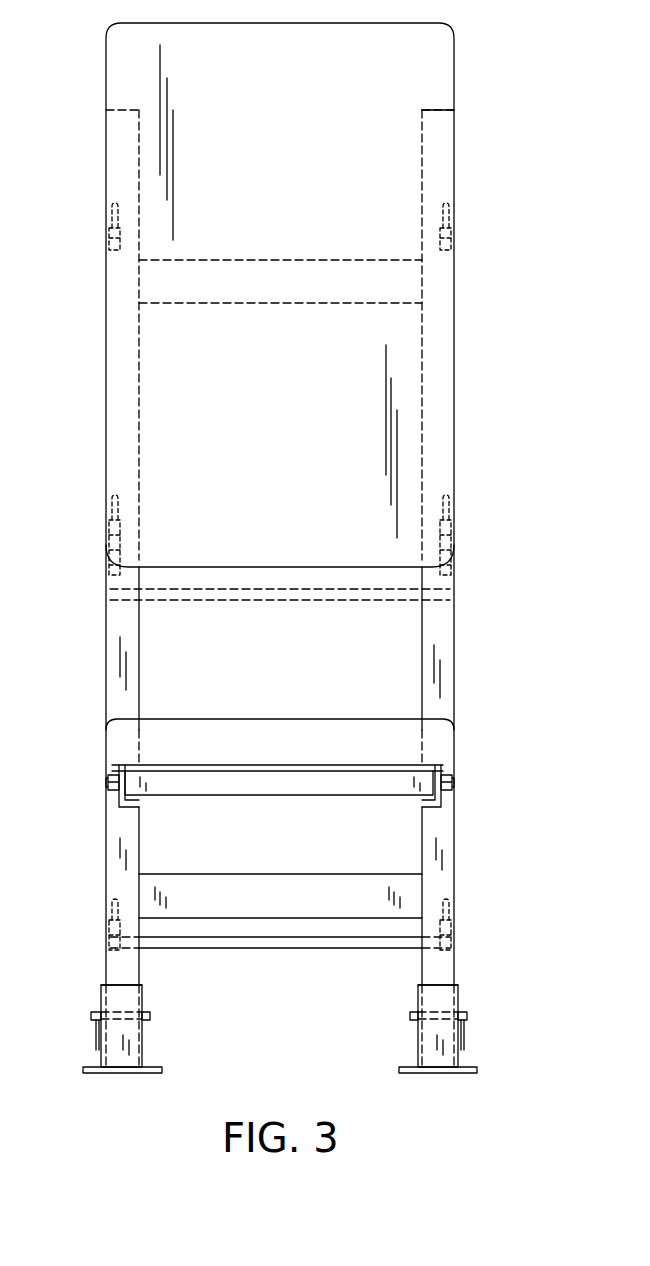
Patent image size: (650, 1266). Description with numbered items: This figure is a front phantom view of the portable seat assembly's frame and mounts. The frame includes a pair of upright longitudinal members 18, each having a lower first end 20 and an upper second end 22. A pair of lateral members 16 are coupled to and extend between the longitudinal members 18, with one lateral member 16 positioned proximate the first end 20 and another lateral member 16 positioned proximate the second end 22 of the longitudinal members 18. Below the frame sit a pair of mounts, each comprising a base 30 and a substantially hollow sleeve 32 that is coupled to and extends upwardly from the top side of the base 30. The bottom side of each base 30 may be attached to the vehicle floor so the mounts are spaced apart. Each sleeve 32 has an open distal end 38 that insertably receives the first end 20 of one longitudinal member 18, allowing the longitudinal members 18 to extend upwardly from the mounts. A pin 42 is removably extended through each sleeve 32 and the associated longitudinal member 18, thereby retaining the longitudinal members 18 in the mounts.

The lateral member 16 is at (202, 260).
The longitudinal member 18 is at (106, 441).
The first end 20 is at (335, 1032).
The second end 22 is at (434, 110).
The base 30 is at (477, 1068).
The sleeve 32 is at (458, 997).
The distal end 38 is at (437, 985).
The pin 42 is at (437, 1108).